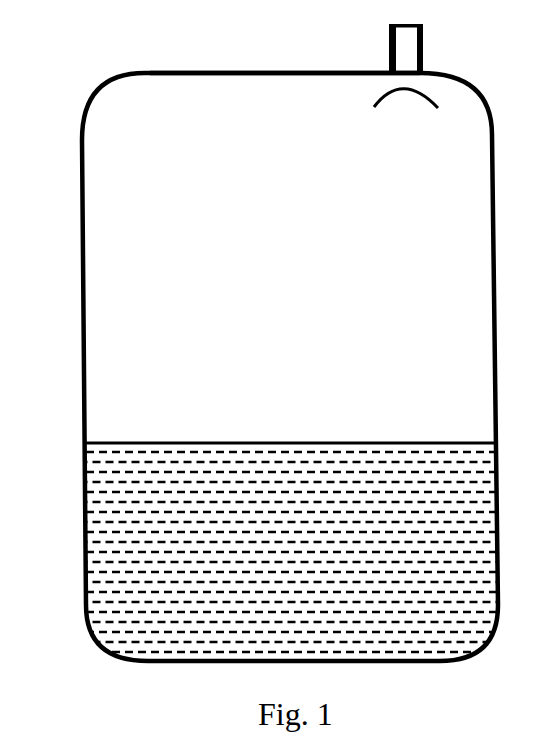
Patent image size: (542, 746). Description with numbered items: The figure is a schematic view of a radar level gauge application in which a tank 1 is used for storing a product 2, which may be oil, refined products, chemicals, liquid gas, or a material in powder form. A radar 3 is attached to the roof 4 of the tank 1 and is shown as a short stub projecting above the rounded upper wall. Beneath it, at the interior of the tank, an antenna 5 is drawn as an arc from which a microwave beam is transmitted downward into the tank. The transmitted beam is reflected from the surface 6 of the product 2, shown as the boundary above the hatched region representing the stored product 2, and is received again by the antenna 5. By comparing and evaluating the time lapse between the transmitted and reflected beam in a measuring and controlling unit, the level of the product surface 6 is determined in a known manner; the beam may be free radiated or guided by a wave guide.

The tank 1 is at (83, 232).
The product 2 is at (150, 510).
The radar 3 is at (427, 55).
The roof 4 is at (236, 75).
The antenna 5 is at (376, 101).
The surface 6 is at (287, 442).